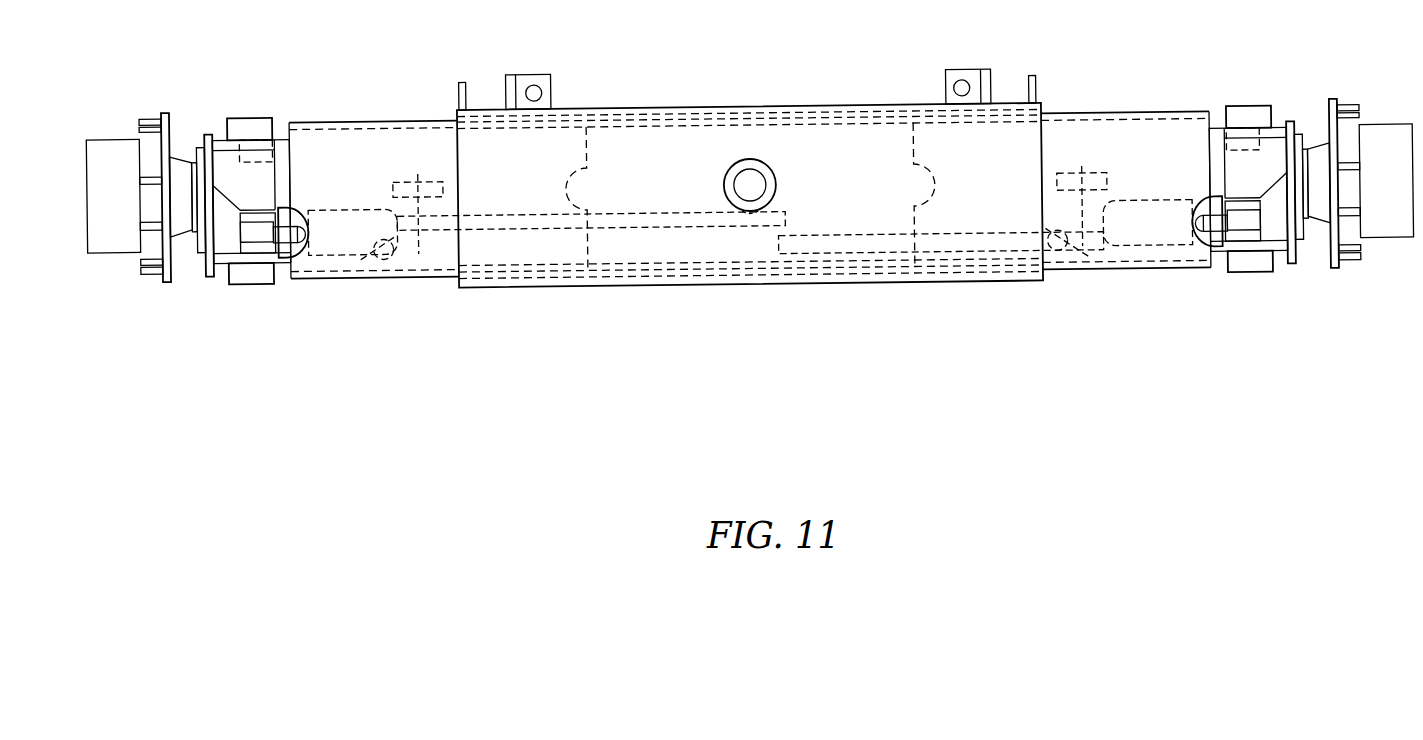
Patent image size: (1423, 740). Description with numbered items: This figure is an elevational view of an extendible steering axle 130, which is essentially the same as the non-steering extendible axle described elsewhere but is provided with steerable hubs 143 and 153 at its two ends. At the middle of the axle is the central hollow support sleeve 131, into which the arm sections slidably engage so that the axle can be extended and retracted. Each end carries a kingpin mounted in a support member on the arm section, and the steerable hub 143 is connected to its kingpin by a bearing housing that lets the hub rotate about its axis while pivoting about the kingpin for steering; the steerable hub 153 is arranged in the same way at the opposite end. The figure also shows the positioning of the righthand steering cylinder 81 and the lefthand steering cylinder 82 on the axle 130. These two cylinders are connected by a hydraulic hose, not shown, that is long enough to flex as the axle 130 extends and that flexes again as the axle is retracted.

The extendible steering axle 130 is at (697, 98).
The central hollow support sleeve 131 is at (750, 153).
The steerable hub 153 is at (173, 152).
The steerable hub 143 is at (1358, 158).
The lefthand steering cylinder 82 is at (547, 251).
The righthand steering cylinder 81 is at (985, 246).